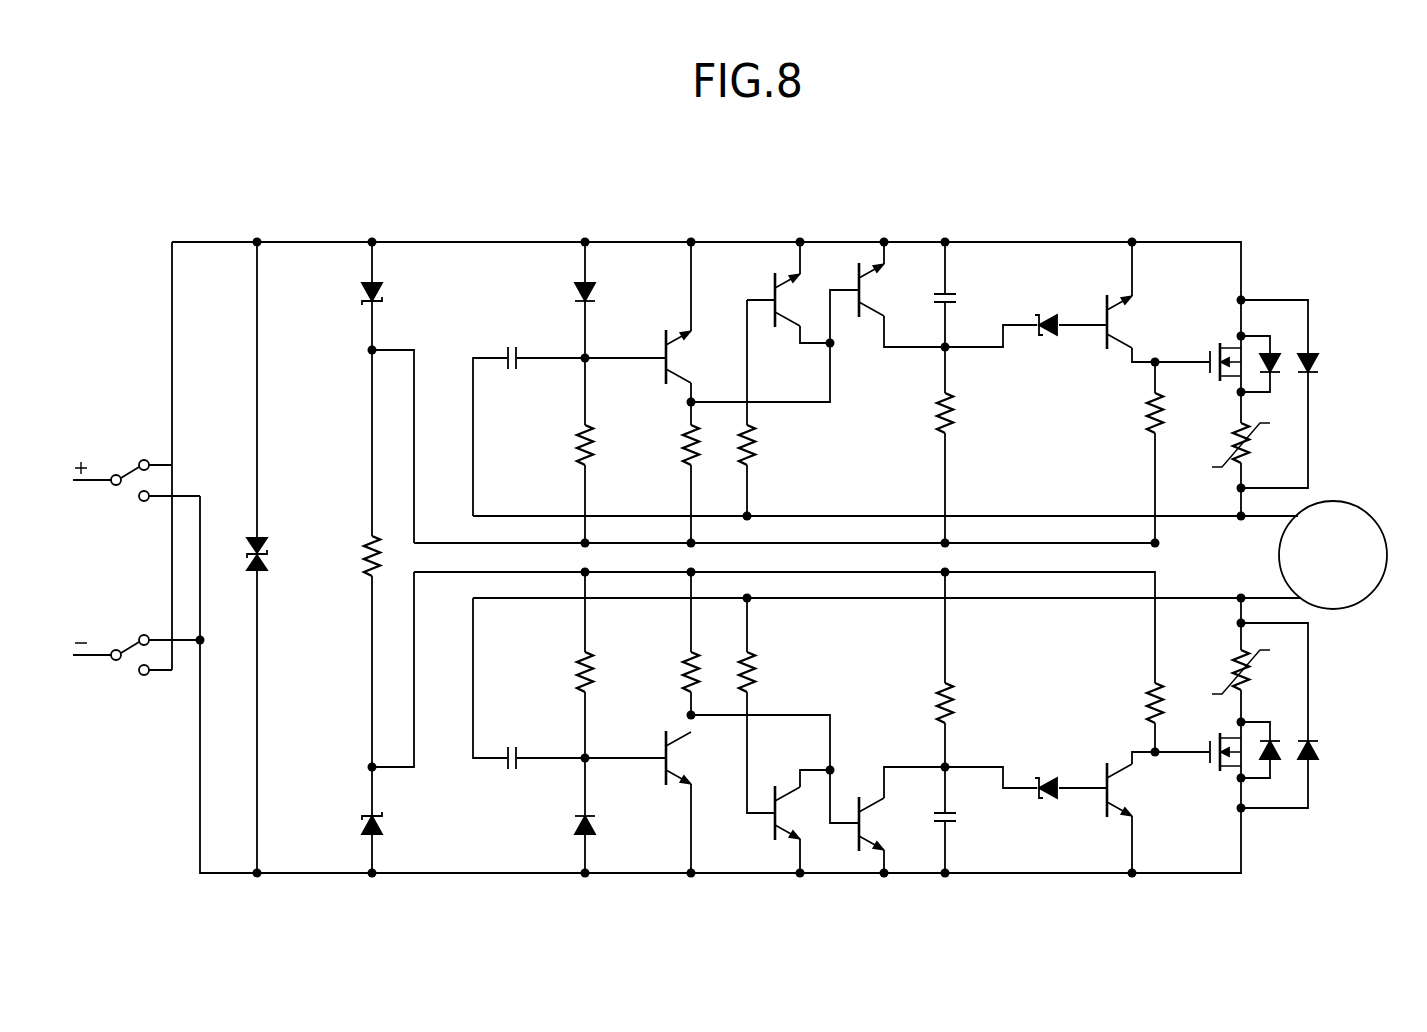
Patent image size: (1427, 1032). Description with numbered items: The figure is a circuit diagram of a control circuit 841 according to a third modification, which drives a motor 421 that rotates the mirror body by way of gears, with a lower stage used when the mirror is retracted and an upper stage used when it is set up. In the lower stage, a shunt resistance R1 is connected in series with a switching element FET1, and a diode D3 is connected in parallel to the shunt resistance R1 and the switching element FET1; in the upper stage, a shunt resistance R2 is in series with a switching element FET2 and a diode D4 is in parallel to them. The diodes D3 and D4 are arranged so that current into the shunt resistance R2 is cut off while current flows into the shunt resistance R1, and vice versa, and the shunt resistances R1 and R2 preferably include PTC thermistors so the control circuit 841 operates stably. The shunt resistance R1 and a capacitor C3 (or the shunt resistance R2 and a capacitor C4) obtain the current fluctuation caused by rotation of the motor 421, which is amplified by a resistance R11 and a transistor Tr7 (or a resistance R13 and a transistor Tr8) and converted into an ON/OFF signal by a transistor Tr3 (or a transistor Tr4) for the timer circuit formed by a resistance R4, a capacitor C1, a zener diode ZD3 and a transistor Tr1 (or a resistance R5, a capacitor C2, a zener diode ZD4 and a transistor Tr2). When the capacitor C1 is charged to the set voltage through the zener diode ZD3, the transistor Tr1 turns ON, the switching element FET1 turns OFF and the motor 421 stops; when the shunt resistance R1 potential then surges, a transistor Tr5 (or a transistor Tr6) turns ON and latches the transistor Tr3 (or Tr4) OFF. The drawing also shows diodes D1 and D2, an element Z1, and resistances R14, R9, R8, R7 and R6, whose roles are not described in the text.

The control circuit 841 is at (460, 199).
The motor 421 is at (1390, 497).
The shunt resistance R1 is at (1240, 652).
The shunt resistance R2 is at (1240, 452).
The switching element FET1 is at (1209, 741).
The switching element FET2 is at (1209, 376).
The diode D1 is at (603, 825).
The diode D2 is at (602, 293).
The diode D3 is at (1328, 750).
The diode D4 is at (1328, 363).
The bidirectional zener diode Z1 is at (274, 560).
The zener diode ZD3 is at (398, 825).
The zener diode ZD4 is at (398, 293).
The resistor R14 is at (350, 556).
The resistance R13 is at (560, 445).
The resistance R11 is at (560, 672).
The resistor R9 is at (671, 445).
The resistor R8 is at (672, 672).
The resistor R7 is at (766, 445).
The resistor R6 is at (766, 672).
The resistance R5 is at (965, 413).
The resistance R4 is at (965, 703).
The capacitor C1 is at (960, 817).
The capacitor C2 is at (961, 298).
The capacitor C3 is at (507, 773).
The capacitor C4 is at (507, 343).
The transistor Tr1 is at (1138, 790).
The transistor Tr2 is at (1138, 322).
The transistor Tr3 is at (890, 824).
The transistor Tr4 is at (892, 290).
The transistor Tr5 is at (783, 793).
The transistor Tr6 is at (784, 325).
The transistor Tr7 is at (696, 758).
The transistor Tr8 is at (697, 357).